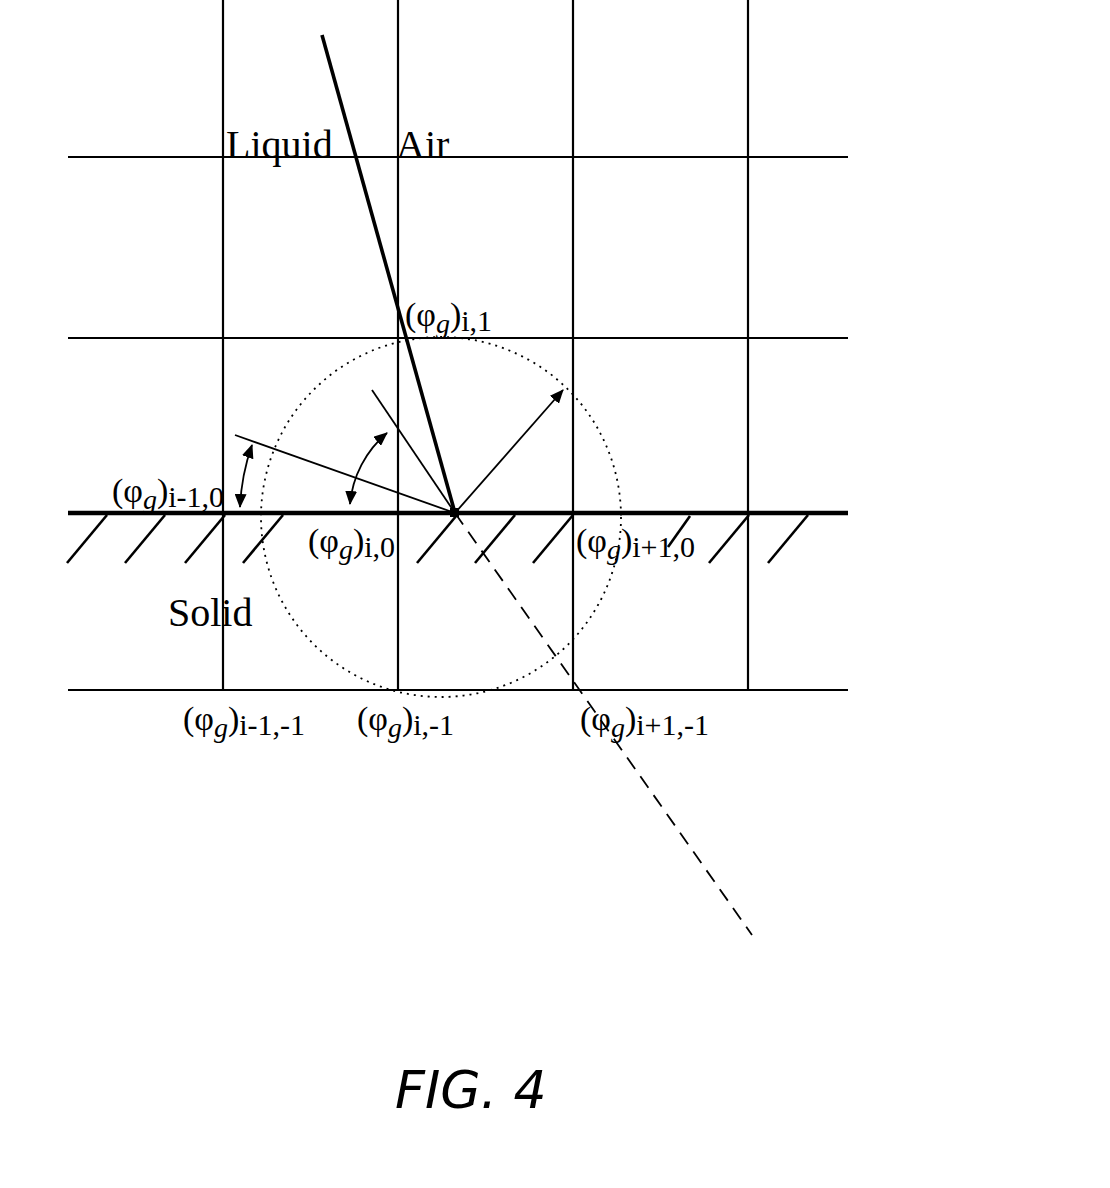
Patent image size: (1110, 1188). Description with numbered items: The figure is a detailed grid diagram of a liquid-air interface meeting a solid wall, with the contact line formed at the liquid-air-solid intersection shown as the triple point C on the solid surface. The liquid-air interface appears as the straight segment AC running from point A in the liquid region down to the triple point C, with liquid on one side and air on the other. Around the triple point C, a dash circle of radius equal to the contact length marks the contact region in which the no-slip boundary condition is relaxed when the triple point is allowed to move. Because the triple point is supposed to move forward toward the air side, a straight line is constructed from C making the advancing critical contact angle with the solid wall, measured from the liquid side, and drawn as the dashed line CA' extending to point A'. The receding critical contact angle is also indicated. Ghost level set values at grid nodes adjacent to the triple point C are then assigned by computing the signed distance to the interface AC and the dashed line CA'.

The interface AC endpoint A is at (388, 267).
The dashed line CA' endpoint A' is at (628, 736).
The triple point C is at (458, 492).